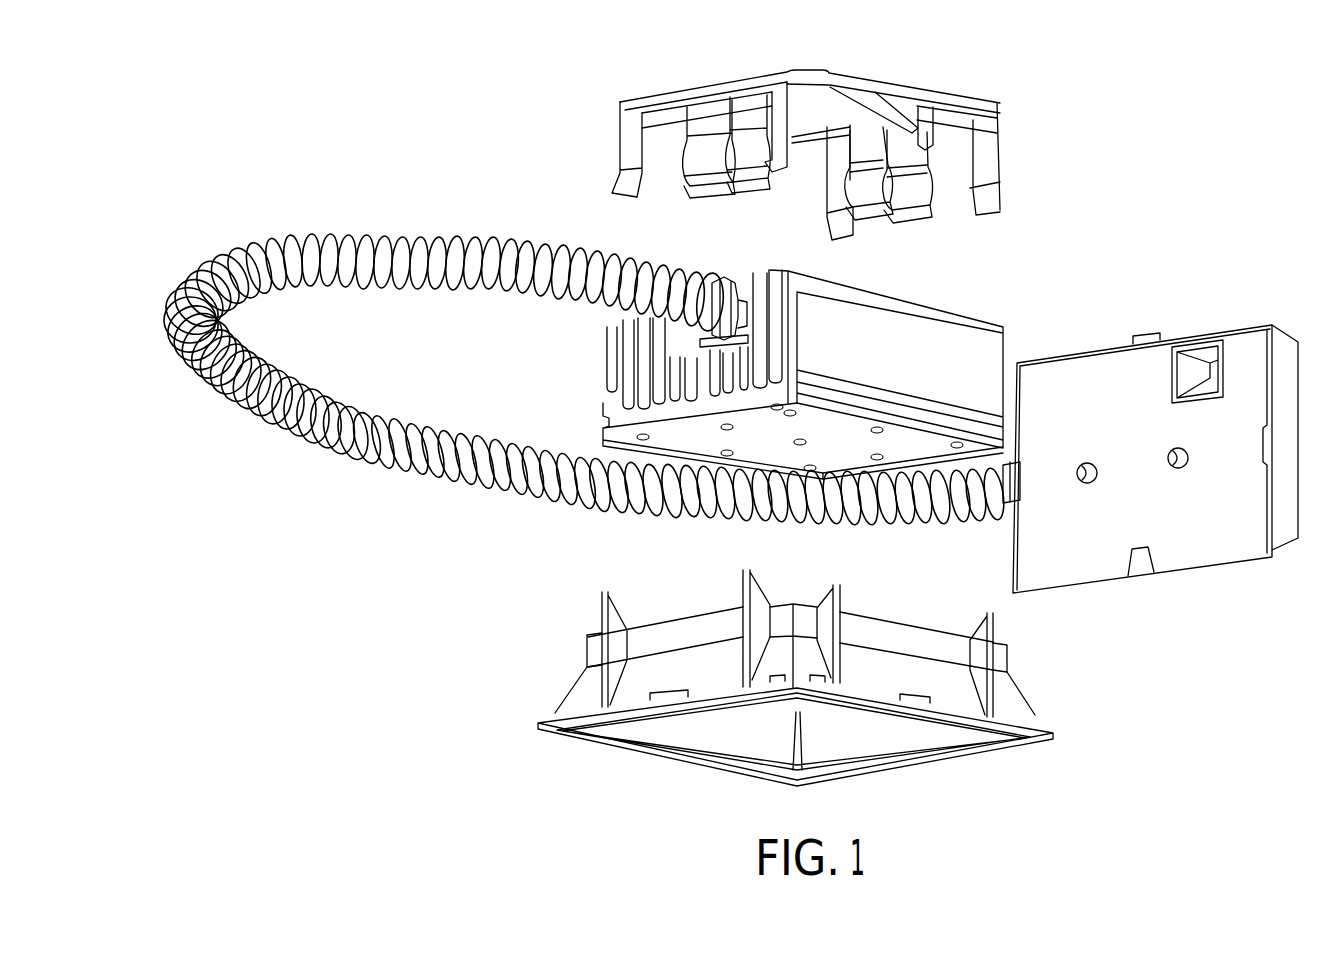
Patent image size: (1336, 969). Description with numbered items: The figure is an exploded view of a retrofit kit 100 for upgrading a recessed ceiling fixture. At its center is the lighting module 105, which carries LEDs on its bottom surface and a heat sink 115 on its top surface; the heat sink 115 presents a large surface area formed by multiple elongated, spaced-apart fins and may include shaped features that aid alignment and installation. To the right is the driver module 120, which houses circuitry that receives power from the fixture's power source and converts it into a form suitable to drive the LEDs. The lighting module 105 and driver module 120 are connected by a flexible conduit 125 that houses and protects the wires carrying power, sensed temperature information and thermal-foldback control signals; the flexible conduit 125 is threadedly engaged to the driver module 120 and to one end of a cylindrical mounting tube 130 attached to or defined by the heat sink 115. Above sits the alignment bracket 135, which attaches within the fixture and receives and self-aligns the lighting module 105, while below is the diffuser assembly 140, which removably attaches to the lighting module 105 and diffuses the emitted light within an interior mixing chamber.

The retrofit kit 100 is at (318, 110).
The lighting module 105 is at (1030, 290).
The heat sink 115 is at (1004, 350).
The driver module 120 is at (1208, 603).
The flexible conduit 125 is at (292, 428).
The cylindrical mounting tube 130 is at (740, 290).
The alignment bracket 135 is at (1048, 121).
The diffuser assembly 140 is at (1105, 722).